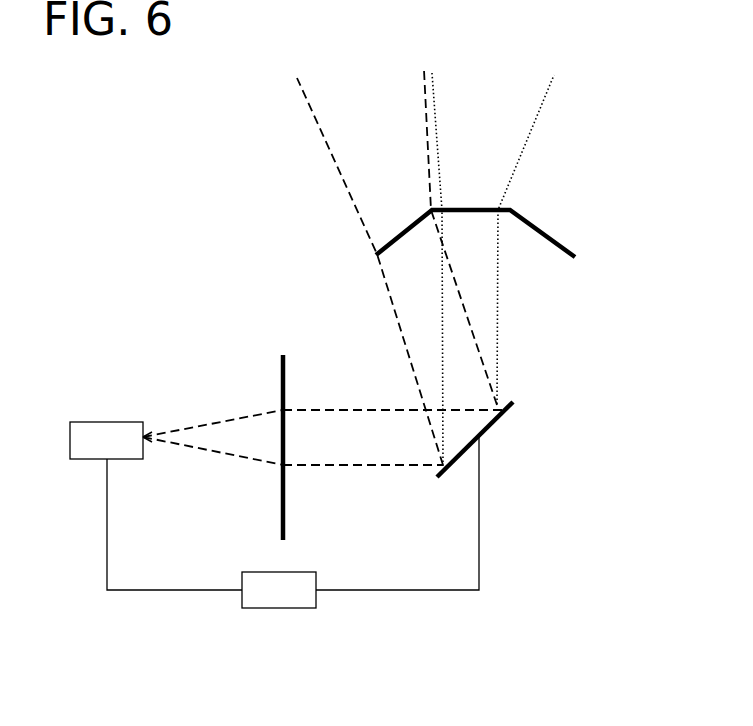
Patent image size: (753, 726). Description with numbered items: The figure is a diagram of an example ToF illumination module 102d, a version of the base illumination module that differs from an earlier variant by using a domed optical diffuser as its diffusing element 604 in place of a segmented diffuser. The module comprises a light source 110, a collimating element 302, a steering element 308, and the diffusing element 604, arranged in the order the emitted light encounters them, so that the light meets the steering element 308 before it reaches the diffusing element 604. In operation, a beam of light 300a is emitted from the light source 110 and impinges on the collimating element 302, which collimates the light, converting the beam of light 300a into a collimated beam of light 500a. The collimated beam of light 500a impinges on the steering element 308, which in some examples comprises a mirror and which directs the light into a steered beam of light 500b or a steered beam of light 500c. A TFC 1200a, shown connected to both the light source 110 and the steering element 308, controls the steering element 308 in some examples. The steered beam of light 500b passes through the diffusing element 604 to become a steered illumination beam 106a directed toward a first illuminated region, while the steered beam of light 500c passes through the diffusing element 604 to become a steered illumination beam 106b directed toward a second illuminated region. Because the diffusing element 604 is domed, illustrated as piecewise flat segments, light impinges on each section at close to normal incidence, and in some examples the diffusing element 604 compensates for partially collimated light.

The ToF illumination module 102d is at (102, 222).
The steered illumination beam 106a is at (395, 113).
The steered illumination beam 106b is at (517, 113).
The light source 110 is at (123, 451).
The beam of light 300a is at (220, 420).
The collimating element 302 is at (288, 362).
The steering element 308 is at (512, 401).
The collimated beam of light 500a is at (383, 463).
The steered beam of light 500b is at (392, 295).
The steered beam of light 500c is at (498, 295).
The diffusing element 604 is at (375, 254).
The TFC 1200a is at (307, 600).